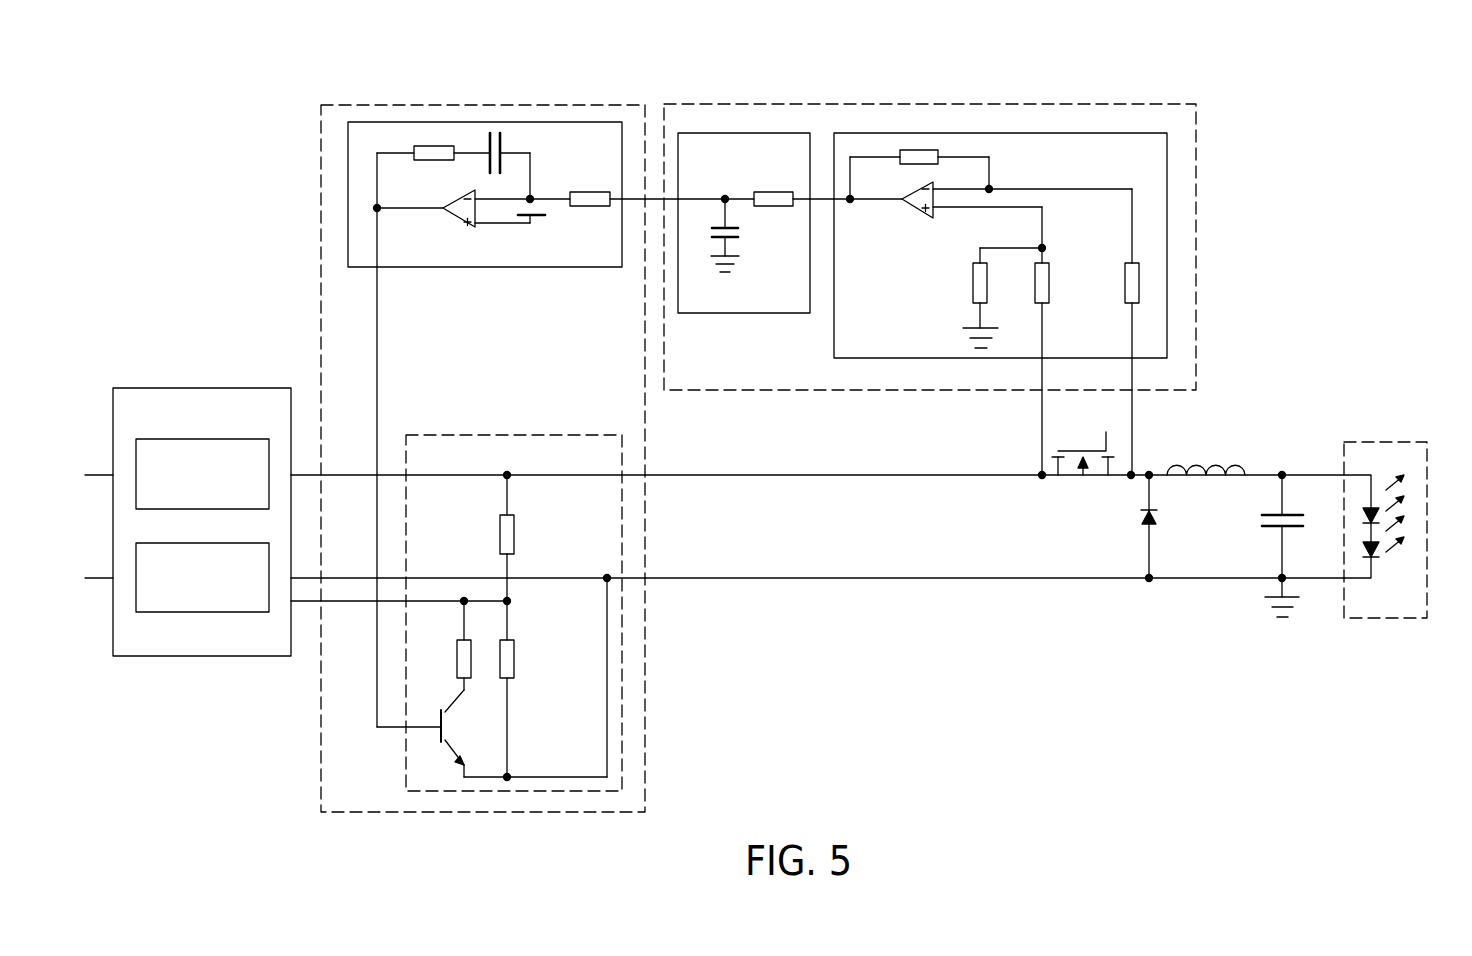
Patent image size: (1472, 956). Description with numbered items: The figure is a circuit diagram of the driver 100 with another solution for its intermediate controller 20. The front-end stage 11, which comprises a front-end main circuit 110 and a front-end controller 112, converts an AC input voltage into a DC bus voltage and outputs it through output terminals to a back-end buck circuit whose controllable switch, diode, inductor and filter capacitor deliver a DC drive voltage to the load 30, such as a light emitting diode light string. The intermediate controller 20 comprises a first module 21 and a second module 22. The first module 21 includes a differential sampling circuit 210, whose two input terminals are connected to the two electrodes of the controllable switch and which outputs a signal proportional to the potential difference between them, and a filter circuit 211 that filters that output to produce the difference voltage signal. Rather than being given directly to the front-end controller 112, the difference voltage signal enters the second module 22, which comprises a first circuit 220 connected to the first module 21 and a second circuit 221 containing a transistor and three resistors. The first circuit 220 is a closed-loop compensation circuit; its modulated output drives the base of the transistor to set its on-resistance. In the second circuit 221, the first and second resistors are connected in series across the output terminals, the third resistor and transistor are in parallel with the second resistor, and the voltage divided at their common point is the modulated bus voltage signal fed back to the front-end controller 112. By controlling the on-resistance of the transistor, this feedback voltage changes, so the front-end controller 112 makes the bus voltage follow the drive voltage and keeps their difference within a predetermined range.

The driver 100 is at (284, 98).
The front-end stage 11 is at (247, 388).
The front-end main circuit 110 is at (203, 439).
The front-end controller 112 is at (203, 543).
The intermediate controller 20 is at (800, 47).
The first module 21 is at (745, 103).
The second module 22 is at (577, 105).
The differential sampling circuit 210 is at (1166, 217).
The filter circuit 211 is at (737, 313).
The first circuit 220 is at (493, 267).
The second circuit 221 is at (542, 435).
The load 30 is at (1385, 442).